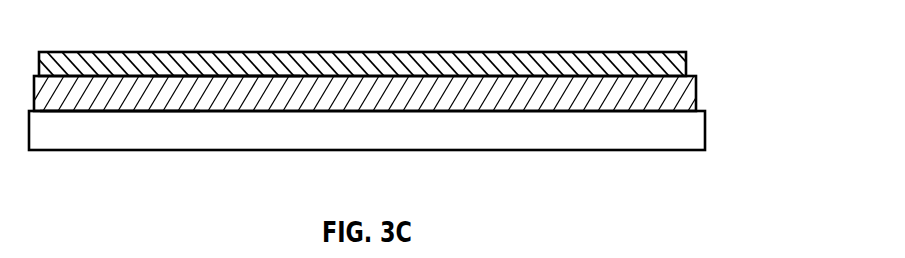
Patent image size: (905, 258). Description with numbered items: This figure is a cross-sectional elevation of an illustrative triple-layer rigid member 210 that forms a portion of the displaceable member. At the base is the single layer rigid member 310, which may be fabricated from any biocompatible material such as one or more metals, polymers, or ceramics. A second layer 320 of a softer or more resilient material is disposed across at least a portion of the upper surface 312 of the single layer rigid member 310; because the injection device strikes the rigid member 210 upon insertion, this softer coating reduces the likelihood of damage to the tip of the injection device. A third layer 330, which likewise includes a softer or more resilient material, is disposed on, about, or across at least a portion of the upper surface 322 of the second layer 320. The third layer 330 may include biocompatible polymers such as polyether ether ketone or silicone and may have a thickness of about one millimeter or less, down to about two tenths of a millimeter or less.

The rigid member 210 is at (686, 52).
The single layer rigid member 310 is at (705, 133).
The upper surface of the single layer rigid member 312 is at (65, 111).
The second layer 320 is at (696, 98).
The upper surface of the second layer 322 is at (172, 77).
The third layer 330 is at (686, 67).